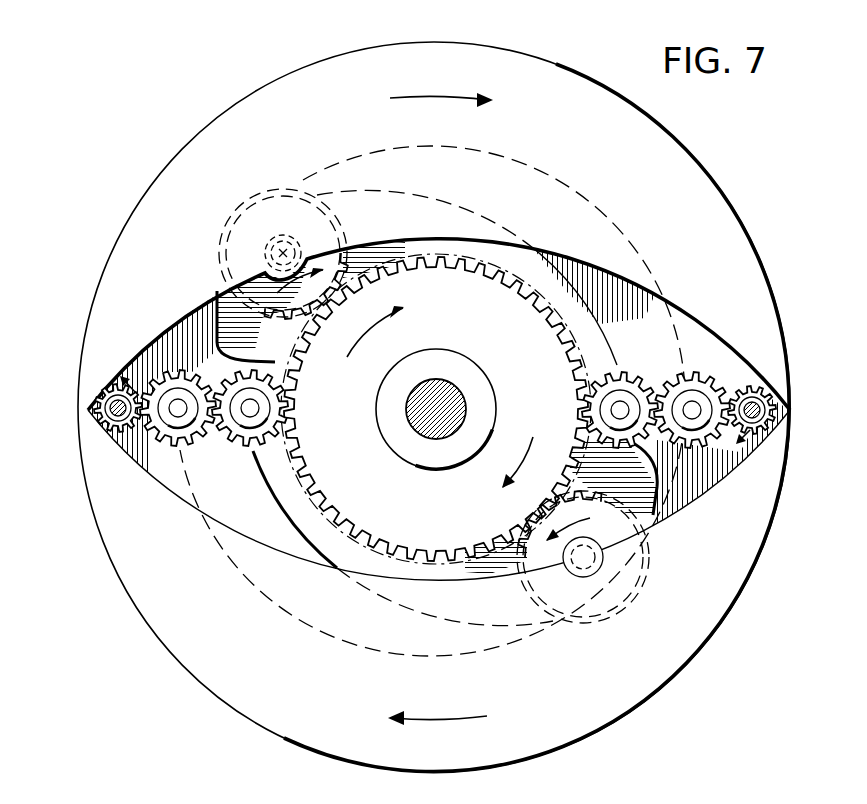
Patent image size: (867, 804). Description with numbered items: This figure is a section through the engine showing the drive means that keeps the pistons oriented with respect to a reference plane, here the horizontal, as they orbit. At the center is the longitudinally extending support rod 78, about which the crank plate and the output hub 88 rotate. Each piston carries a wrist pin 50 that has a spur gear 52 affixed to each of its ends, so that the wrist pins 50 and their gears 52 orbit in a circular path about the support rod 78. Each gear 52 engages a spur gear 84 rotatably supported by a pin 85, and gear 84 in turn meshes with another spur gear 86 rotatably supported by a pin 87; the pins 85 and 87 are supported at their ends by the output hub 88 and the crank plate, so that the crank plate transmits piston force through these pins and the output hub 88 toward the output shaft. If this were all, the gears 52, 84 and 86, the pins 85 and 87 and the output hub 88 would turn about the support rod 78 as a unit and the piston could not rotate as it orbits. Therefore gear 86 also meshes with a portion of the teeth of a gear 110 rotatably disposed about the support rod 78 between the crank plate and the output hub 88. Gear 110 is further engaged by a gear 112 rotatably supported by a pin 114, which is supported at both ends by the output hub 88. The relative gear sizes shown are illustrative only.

The wrist pin 50 is at (112, 406).
The spur gear 52 is at (115, 418).
The support rod 78 is at (440, 400).
The spur gear 84 is at (183, 372).
The pin 85 is at (184, 414).
The spur gear 86 is at (288, 420).
The pin 87 is at (250, 400).
The output hub 88 is at (697, 182).
The gear 110 is at (518, 296).
The gear 112 is at (297, 305).
The pin 114 is at (268, 250).